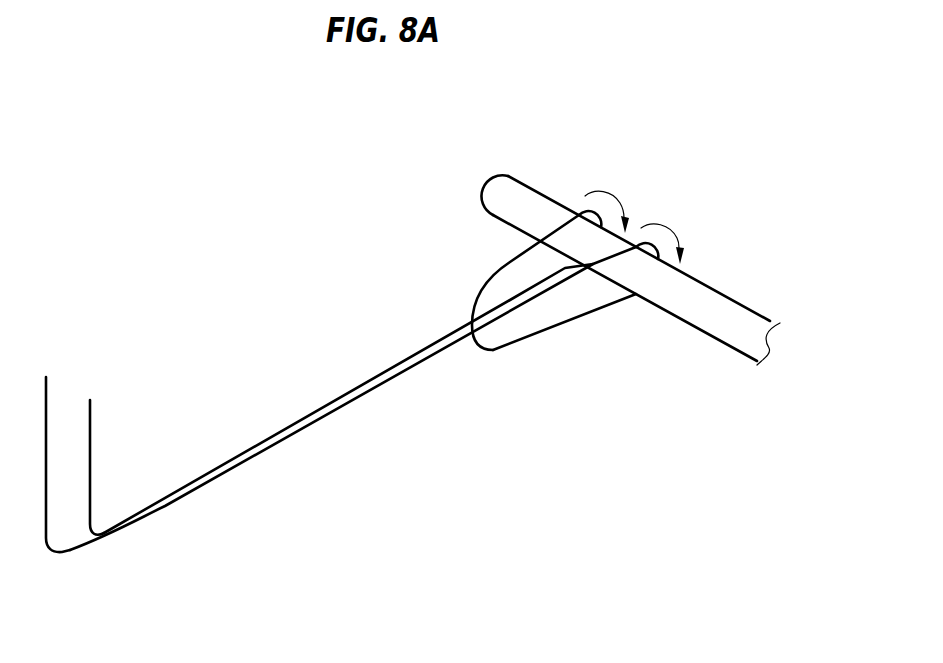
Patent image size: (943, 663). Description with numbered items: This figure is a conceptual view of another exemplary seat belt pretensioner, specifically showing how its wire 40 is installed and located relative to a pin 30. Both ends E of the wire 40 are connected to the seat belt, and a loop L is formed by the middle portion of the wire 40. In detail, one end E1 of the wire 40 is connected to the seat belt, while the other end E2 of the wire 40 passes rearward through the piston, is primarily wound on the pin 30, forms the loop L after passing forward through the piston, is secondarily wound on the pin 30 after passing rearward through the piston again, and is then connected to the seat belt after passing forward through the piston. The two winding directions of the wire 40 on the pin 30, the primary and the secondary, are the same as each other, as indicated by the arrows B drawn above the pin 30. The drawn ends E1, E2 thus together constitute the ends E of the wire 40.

The pin 30 is at (705, 305).
The wire 40 is at (387, 383).
The ends of the wire E is at (116, 392).
The one end of the wire E1 is at (90, 400).
The other end of the wire E2 is at (47, 377).
The loop L is at (478, 352).
The arrows B is at (634, 212).